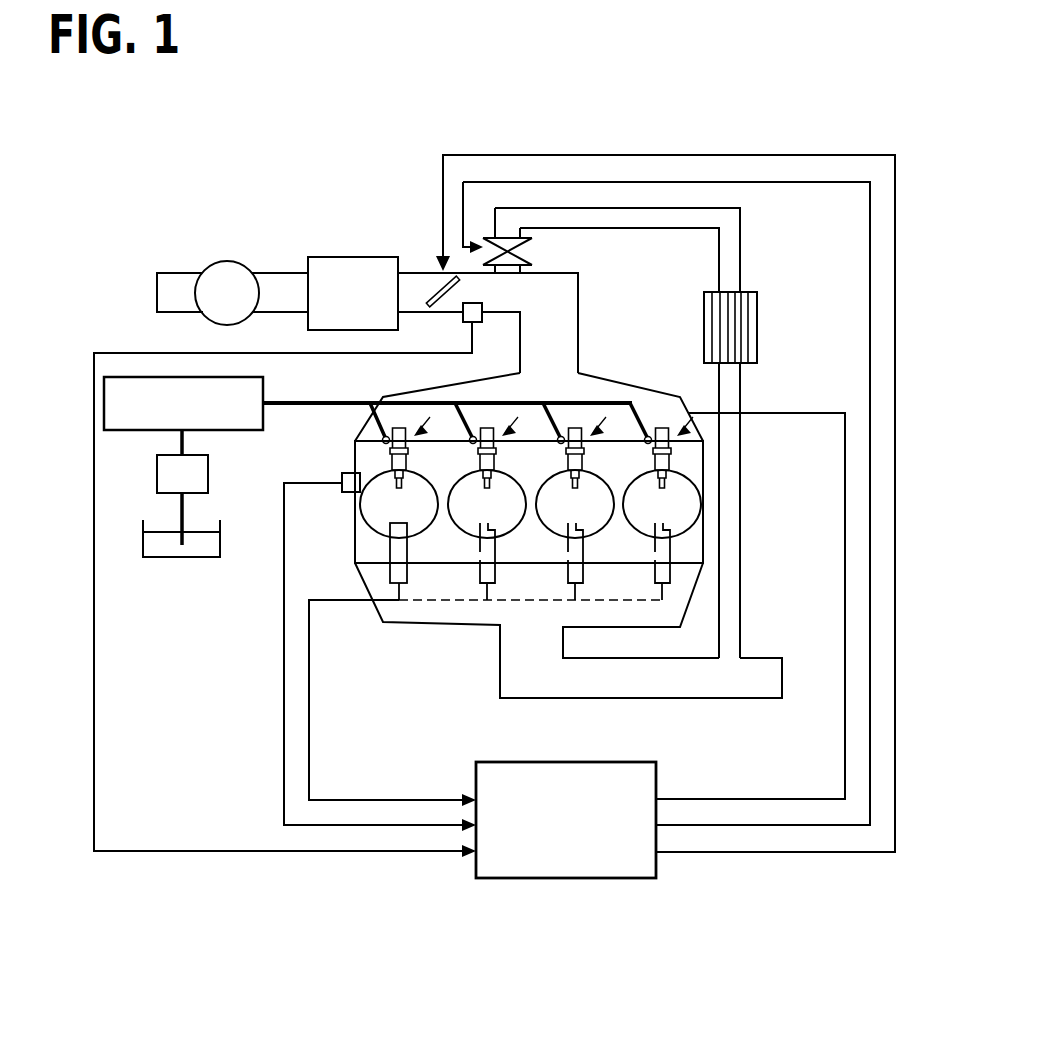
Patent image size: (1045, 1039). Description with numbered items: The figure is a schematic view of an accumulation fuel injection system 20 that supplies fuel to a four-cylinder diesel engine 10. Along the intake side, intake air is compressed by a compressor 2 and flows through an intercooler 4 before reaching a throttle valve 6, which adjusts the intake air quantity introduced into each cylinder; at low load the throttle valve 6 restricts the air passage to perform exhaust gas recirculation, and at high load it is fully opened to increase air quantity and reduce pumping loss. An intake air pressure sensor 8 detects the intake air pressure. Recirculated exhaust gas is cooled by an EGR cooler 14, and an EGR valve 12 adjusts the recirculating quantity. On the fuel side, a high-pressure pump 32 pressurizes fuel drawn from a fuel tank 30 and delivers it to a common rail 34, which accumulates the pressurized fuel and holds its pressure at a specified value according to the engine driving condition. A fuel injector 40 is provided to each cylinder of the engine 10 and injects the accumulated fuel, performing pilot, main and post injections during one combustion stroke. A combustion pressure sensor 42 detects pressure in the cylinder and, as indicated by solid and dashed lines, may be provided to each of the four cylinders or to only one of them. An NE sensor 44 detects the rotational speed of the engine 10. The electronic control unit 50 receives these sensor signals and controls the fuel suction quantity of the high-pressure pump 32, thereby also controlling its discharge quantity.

The compressor 2 is at (225, 261).
The intercooler 4 is at (348, 257).
The throttle valve 6 is at (428, 291).
The intake air pressure sensor 8 is at (484, 304).
The diesel engine 10 is at (355, 552).
The EGR valve 12 is at (530, 259).
The EGR cooler 14 is at (757, 327).
The accumulation fuel injection system 20 is at (418, 914).
The fuel tank 30 is at (163, 558).
The high-pressure pump 32 is at (209, 475).
The common rail 34 is at (233, 377).
The fuel injector 40 is at (388, 452).
The combustion pressure sensor (CPS) 42 is at (668, 557).
The NE sensor 44 is at (349, 493).
The electronic control unit (ECU) 50 is at (589, 879).